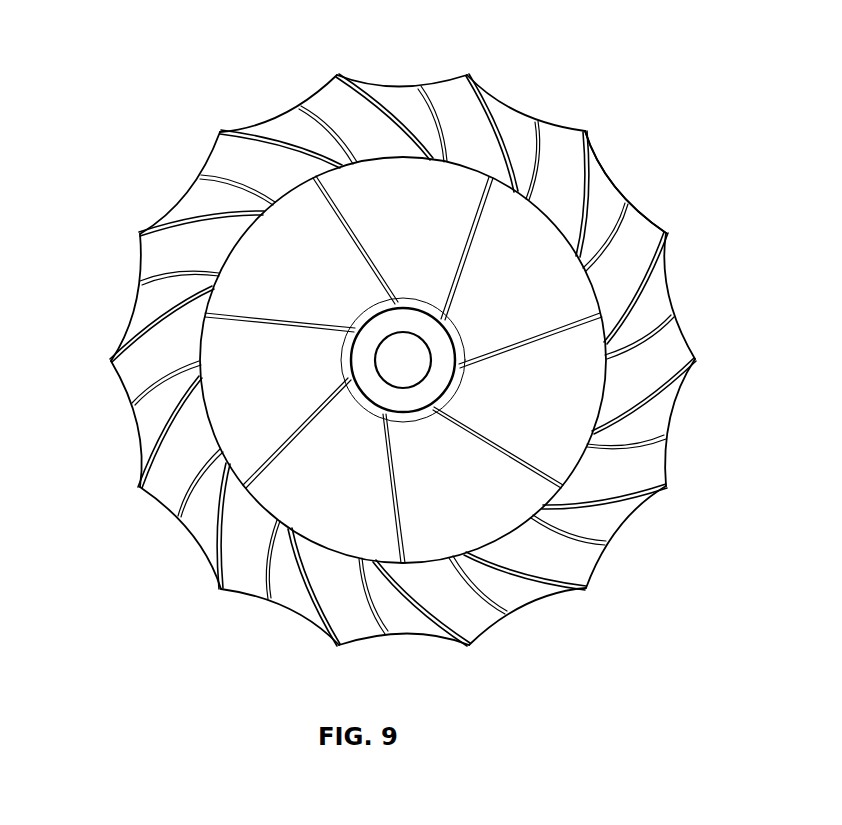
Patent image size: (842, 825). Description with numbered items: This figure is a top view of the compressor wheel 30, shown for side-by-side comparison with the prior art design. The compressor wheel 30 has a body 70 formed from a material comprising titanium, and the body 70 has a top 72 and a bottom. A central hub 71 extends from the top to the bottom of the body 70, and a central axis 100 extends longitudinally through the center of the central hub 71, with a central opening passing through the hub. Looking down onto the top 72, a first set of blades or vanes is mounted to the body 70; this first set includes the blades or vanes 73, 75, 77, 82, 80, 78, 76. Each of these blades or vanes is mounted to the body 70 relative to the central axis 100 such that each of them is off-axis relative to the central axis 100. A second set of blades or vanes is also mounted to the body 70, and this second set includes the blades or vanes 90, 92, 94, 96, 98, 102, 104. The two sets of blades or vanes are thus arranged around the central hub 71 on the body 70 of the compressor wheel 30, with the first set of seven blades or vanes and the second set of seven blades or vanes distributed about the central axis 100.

The compressor wheel 30 is at (551, 42).
The body 70 is at (533, 106).
The central hub 71 is at (383, 395).
The top 72 is at (450, 333).
The blade or vane 73 is at (450, 187).
The blade or vane 75 is at (303, 252).
The blade or vane 76 is at (558, 300).
The blade or vane 77 is at (267, 357).
The blade or vane 78 is at (567, 410).
The blade or vane 80 is at (473, 530).
The blade or vane 82 is at (292, 527).
The blade or vane 90 is at (667, 363).
The blade or vane 92 is at (586, 564).
The blade or vane 94 is at (353, 630).
The blade or vane 96 is at (120, 387).
The blade or vane 98 is at (207, 155).
The central axis 100 is at (540, 447).
The blade or vane 102 is at (343, 103).
The blade or vane 104 is at (643, 227).